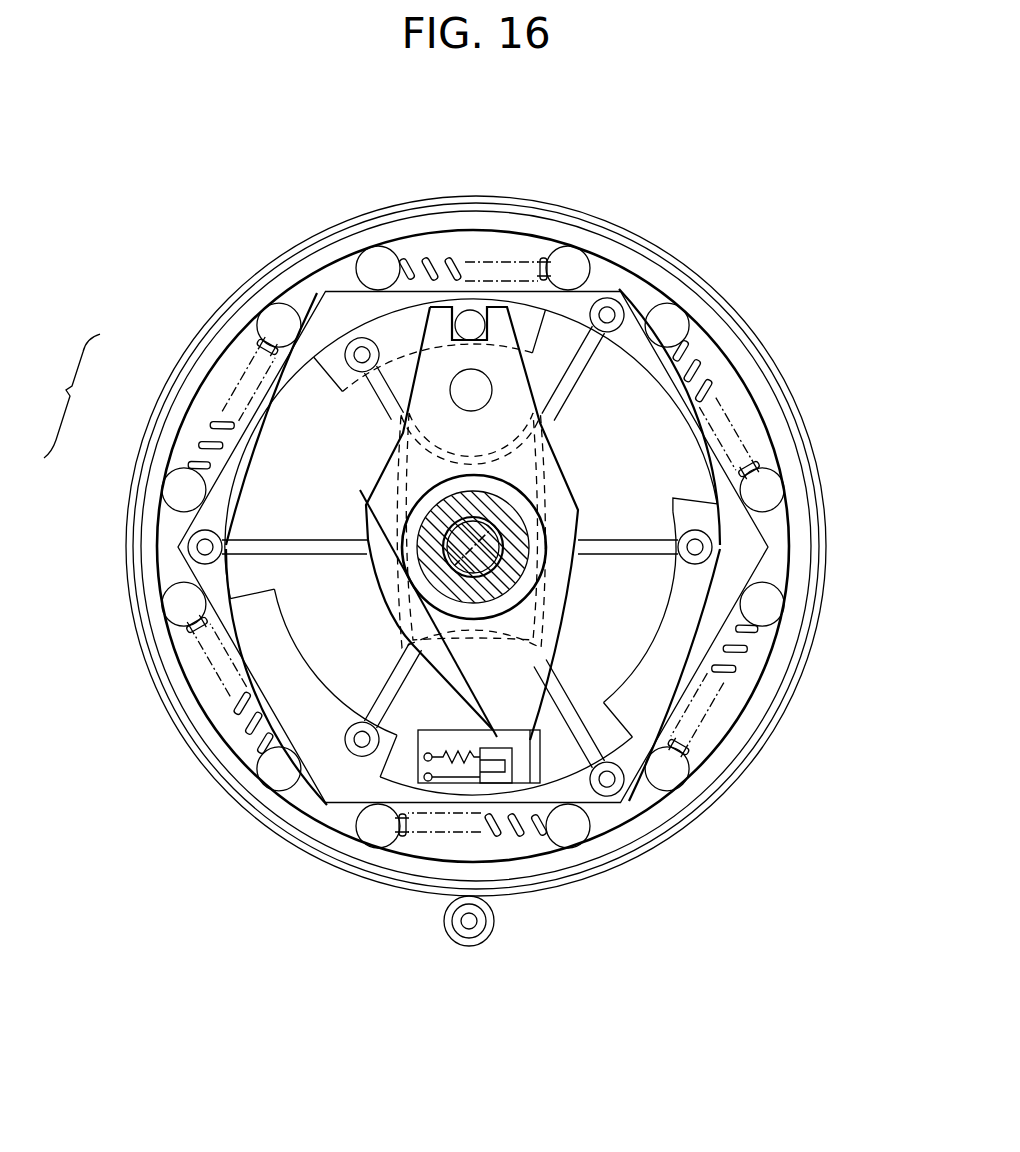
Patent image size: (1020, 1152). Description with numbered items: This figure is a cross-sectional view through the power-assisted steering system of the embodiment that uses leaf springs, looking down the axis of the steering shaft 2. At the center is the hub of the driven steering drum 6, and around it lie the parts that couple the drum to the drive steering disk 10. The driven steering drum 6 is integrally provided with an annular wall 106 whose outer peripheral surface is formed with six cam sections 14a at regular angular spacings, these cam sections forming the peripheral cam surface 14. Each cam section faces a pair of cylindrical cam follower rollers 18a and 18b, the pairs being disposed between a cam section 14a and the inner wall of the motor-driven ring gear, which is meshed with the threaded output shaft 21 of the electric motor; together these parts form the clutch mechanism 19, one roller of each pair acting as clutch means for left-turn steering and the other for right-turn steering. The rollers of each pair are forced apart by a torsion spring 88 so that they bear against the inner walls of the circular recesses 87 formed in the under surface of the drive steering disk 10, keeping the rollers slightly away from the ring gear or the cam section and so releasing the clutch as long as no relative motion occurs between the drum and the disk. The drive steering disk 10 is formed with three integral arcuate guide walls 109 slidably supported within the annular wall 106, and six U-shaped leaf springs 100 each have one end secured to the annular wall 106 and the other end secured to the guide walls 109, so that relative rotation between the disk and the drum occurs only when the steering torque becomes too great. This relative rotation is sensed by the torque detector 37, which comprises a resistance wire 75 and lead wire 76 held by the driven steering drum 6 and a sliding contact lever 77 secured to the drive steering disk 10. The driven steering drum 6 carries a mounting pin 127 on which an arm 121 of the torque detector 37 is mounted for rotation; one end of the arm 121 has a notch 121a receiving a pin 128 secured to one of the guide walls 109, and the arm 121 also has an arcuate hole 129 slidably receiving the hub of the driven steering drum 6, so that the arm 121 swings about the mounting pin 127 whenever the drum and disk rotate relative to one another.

The steering shaft 2 is at (493, 550).
The driven steering drum 6 is at (776, 565).
The drive steering disk 10 is at (230, 762).
The peripheral cam surface 14 is at (587, 828).
The cam sections 14a is at (470, 292).
The cam follower roller 18a is at (378, 268).
The cam follower roller 18b is at (568, 268).
The clutch mechanism 19 is at (67, 396).
The output shaft 21 is at (469, 922).
The torque detector 37 is at (640, 860).
The resistance wire 75 is at (452, 757).
The lead wire 76 is at (467, 773).
The sliding contact lever 77 is at (500, 750).
The circular recesses 87 is at (402, 260).
The torsion spring 88 is at (442, 258).
The leaf springs 100 is at (272, 540).
The annular wall 106 is at (740, 462).
The arcuate guide walls 109 is at (335, 378).
The arm 121 is at (565, 472).
The notch 121a is at (385, 317).
The mounting pin 127 is at (470, 402).
The pin 128 is at (470, 310).
The arcuate hole 129 is at (405, 540).